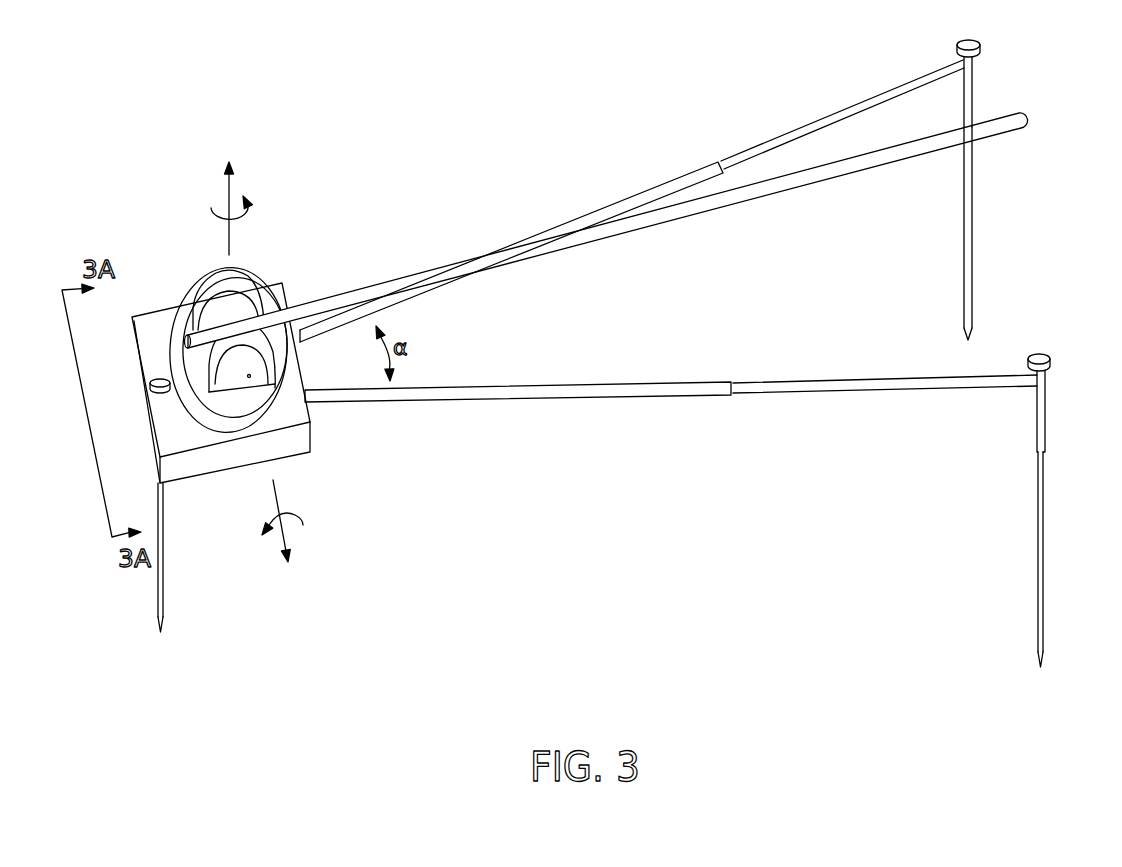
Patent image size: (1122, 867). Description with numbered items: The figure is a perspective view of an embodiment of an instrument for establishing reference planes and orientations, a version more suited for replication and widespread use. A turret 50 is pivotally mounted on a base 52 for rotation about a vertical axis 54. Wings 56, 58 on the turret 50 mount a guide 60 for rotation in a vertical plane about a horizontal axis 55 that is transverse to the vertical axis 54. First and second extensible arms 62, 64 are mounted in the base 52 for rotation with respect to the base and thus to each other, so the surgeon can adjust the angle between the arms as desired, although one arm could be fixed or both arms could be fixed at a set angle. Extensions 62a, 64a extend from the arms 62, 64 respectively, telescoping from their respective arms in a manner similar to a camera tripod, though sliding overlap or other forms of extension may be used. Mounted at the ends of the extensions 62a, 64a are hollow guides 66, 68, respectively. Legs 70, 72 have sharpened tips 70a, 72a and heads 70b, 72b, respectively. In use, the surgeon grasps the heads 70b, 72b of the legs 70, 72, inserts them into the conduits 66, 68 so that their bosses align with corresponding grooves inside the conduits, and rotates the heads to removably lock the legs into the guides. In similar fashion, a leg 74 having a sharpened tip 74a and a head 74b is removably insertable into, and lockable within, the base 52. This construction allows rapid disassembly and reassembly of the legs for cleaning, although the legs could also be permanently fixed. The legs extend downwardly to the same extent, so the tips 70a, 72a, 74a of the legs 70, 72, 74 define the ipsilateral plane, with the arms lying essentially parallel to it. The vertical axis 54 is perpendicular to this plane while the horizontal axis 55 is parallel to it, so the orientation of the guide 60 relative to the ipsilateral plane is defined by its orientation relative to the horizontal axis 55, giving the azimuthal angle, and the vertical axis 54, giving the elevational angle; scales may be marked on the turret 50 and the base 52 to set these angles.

The turret 50 is at (203, 417).
The base 52 is at (302, 443).
The vertical axis 54 is at (230, 187).
The horizontal axis 55 is at (305, 527).
The wing 56 is at (250, 374).
The wing 58 is at (245, 273).
The guide 60 is at (830, 180).
The first extensible arm 62 is at (583, 398).
The extension 62a is at (832, 390).
The second extensible arm 64 is at (670, 178).
The extension 64a is at (860, 100).
The hollow guide 66 is at (1045, 427).
The hollow guide 68 is at (973, 82).
The leg 70 is at (1043, 570).
The sharpened tip 70a is at (1040, 667).
The head 70b is at (1050, 358).
The leg 72 is at (973, 205).
The sharpened tip 72a is at (975, 338).
The head 72b is at (977, 37).
The leg 74 is at (165, 577).
The sharpened tip 74a is at (160, 633).
The head 74b is at (153, 380).